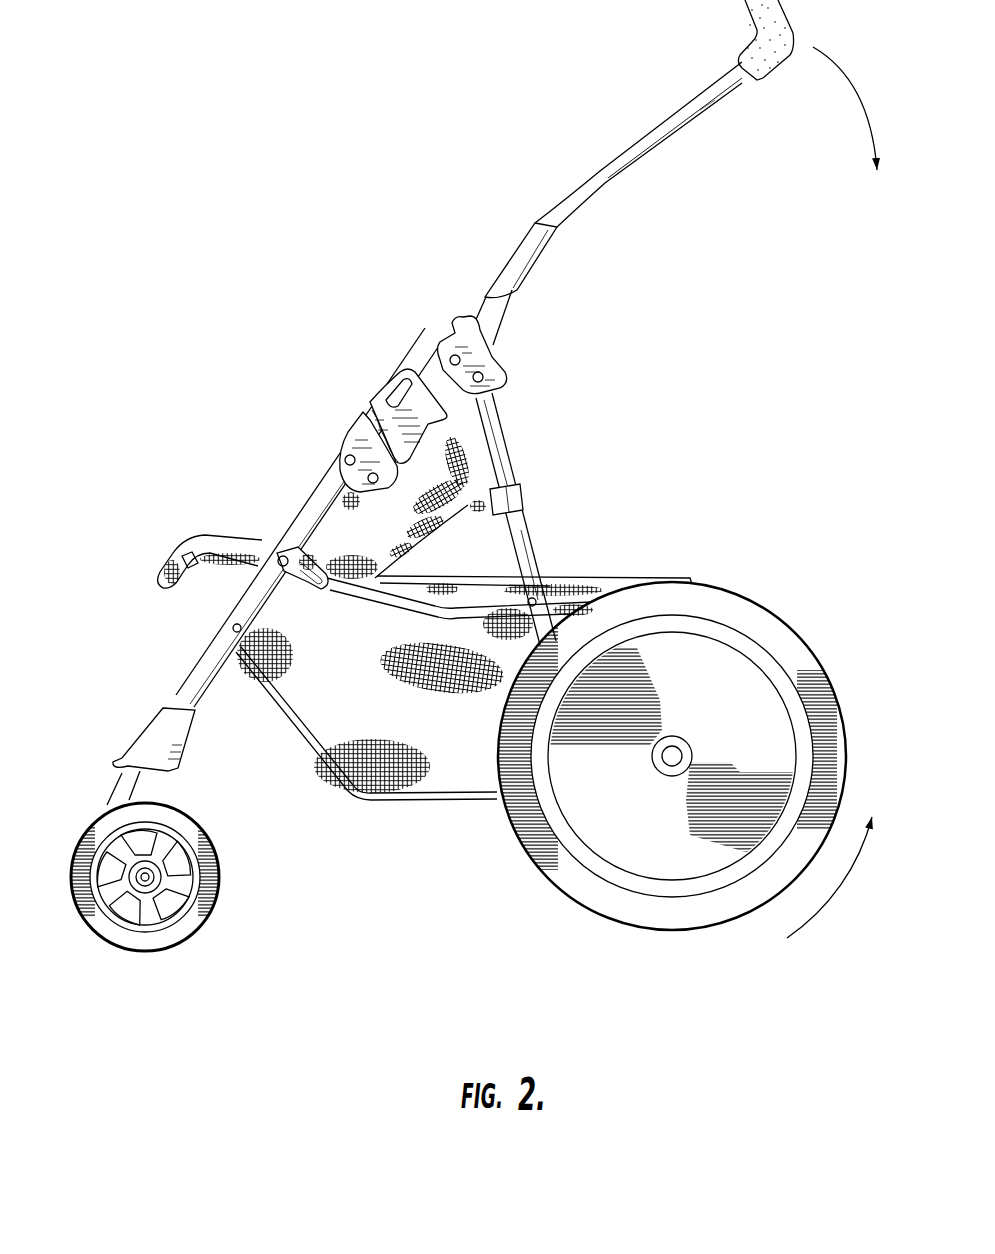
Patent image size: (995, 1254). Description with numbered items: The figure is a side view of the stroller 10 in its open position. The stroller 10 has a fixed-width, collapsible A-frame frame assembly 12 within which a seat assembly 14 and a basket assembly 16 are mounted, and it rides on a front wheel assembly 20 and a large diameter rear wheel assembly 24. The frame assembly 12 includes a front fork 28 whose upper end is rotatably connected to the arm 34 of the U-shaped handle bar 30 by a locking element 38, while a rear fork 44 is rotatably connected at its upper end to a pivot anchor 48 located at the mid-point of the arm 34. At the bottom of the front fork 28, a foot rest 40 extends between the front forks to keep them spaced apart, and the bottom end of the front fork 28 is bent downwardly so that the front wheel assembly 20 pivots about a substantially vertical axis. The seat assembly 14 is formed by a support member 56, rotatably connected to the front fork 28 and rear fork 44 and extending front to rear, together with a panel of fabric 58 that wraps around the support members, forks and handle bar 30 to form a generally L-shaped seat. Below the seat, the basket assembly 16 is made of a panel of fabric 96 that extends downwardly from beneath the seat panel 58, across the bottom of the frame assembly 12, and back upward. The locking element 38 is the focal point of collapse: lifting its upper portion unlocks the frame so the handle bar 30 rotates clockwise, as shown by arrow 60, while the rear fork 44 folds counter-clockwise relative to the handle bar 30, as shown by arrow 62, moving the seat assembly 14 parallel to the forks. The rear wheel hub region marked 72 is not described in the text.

The stroller 10 is at (380, 205).
The frame assembly 12 is at (565, 190).
The seat assembly 14 is at (246, 540).
The basket assembly 16 is at (415, 805).
The second front wheel assembly 20 is at (135, 947).
The second rear wheel assembly 24 is at (638, 912).
The second front fork 28 is at (190, 690).
The handle bar 30 is at (677, 125).
The second arm of the handlebar 34 is at (488, 310).
The second locking element 38 is at (370, 390).
The foot rest 40 is at (155, 742).
The second rear fork 44 is at (517, 542).
The second pivot anchor 48 is at (472, 317).
The second support member 56 is at (413, 593).
The panel of fabric 58 is at (450, 463).
The arrow 60 is at (860, 95).
The arrow 62 is at (828, 907).
The rear wheel hub disc 72 is at (768, 718).
The panel of fabric 96 is at (382, 748).